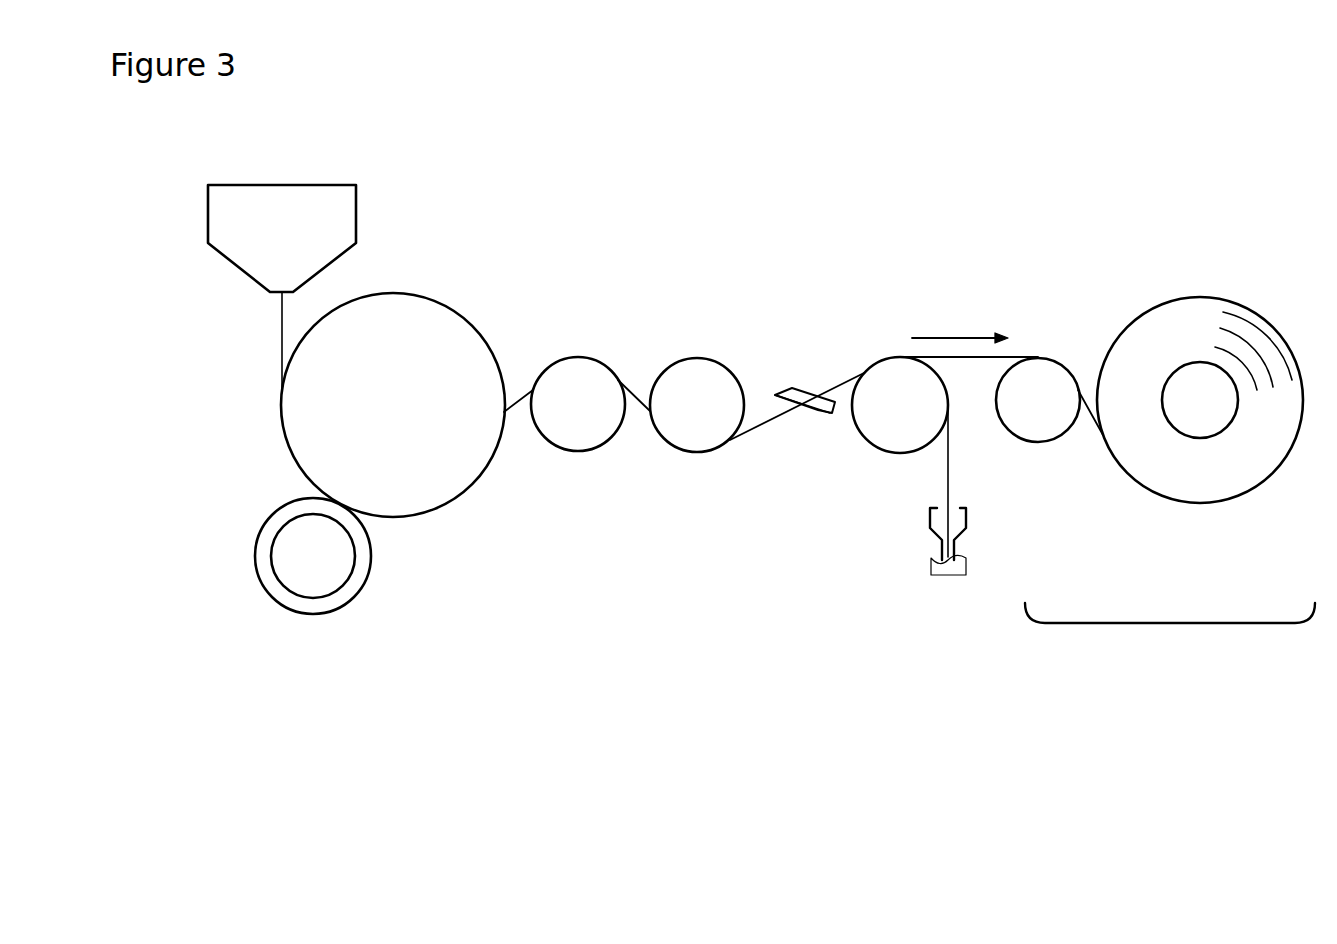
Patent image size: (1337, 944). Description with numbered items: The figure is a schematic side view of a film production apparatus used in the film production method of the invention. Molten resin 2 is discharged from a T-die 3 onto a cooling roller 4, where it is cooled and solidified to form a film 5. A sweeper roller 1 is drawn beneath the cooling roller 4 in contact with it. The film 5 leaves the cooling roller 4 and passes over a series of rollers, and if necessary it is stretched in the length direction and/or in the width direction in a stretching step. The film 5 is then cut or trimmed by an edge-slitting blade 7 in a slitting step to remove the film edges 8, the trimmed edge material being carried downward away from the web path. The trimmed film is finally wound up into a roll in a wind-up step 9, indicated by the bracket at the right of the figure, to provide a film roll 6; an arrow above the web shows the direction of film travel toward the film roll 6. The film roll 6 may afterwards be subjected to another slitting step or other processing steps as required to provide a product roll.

The sweeper roller 1 is at (253, 543).
The molten resin 2 is at (283, 380).
The T-die 3 is at (347, 220).
The cooling roller 4 is at (452, 317).
The film 5 is at (647, 413).
The film roll 6 is at (1200, 305).
The edge-slitting blade 7 is at (790, 387).
The film edge 8 is at (947, 462).
The wind-up step 9 is at (1170, 637).